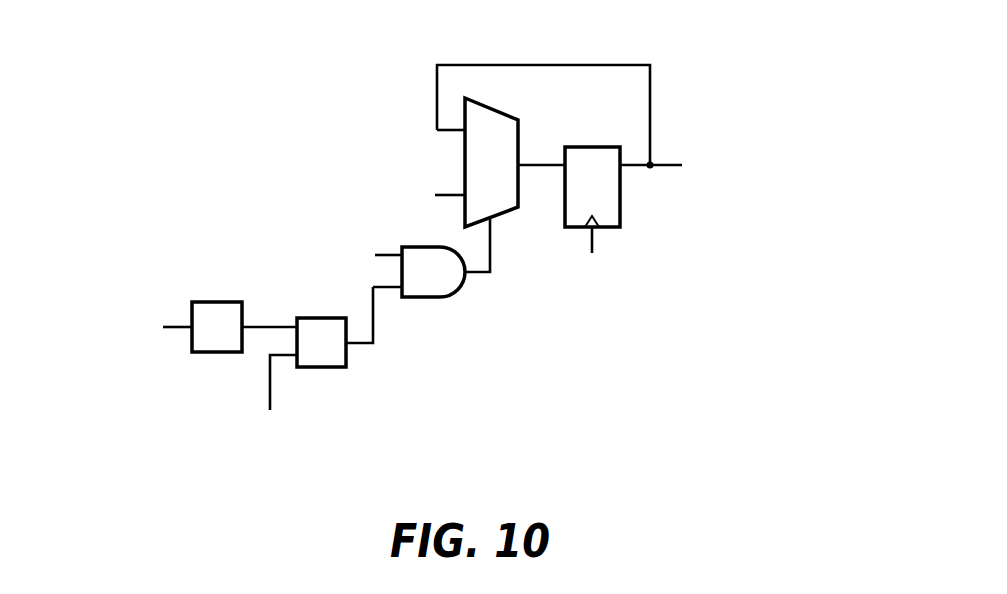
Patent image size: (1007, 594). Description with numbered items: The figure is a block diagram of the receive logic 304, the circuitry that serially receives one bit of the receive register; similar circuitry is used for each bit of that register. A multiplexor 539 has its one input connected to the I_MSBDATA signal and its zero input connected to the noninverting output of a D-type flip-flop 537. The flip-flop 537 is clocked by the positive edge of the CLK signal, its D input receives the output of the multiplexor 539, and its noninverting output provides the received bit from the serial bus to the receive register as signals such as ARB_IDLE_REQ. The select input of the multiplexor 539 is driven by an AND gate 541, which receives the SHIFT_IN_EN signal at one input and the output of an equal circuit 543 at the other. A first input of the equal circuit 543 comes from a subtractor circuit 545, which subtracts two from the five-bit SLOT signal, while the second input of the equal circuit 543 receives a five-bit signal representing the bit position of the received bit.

The receive logic 304 is at (471, 252).
The flip-flop 537 is at (620, 205).
The multiplexor 539 is at (505, 113).
The AND gate 541 is at (448, 295).
The equal circuit 543 is at (340, 367).
The subtractor circuit 545 is at (210, 302).